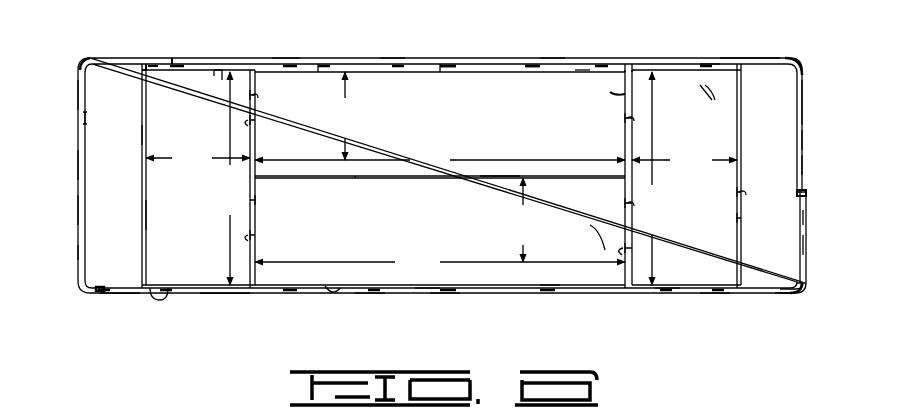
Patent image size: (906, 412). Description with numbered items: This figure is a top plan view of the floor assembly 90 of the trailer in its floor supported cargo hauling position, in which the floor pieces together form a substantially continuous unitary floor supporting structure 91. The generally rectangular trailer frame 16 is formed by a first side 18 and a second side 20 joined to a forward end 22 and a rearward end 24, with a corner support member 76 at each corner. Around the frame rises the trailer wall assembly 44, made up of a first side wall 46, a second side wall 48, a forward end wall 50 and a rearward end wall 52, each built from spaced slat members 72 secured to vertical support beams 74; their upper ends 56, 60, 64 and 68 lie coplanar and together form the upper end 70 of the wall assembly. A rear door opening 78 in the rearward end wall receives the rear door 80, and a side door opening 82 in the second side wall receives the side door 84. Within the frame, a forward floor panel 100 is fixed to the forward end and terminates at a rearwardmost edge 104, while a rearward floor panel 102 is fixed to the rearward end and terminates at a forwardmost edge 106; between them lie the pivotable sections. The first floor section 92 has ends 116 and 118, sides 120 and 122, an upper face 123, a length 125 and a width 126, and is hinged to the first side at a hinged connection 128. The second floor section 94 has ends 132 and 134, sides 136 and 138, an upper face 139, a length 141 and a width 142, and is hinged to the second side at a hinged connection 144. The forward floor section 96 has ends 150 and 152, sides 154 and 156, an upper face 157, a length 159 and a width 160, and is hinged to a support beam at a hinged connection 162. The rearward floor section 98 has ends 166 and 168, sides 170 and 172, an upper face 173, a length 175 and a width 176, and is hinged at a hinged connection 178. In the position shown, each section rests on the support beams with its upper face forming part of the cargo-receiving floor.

The trailer frame 16 is at (742, 60).
The first side 18 is at (548, 70).
The second side 20 is at (442, 294).
The forward end 22 is at (80, 85).
The rearward end 24 is at (801, 110).
The trailer wall assembly 44 is at (76, 166).
The first side wall 46 is at (392, 60).
The second side wall 48 is at (368, 294).
The forward end wall 50 is at (78, 217).
The rearward end wall 52 is at (803, 140).
The upper end 56 is at (452, 70).
The upper end 60 is at (716, 294).
The upper end 64 is at (80, 204).
The upper end 68 is at (801, 90).
The upper end 70 is at (225, 296).
The slat members 72 is at (78, 253).
The vertical support beams 74 is at (86, 118).
The corner support member 76 is at (82, 60).
The rear door opening 78 is at (797, 196).
The rear door 80 is at (805, 242).
The side door opening 82 is at (101, 287).
The side door 84 is at (120, 295).
The floor assembly 90 is at (600, 232).
The floor supporting structure 91 is at (712, 100).
The first floor section 92 is at (428, 116).
The second floor section 94 is at (448, 226).
The forward floor section 96 is at (192, 191).
The rearward floor section 98 is at (698, 126).
The forward floor panel 100 is at (120, 166).
The rearward floor panel 102 is at (776, 136).
The rearwardmost edge 104 is at (147, 216).
The forwardmost edge 106 is at (738, 218).
The end 116 is at (250, 122).
The end 118 is at (627, 119).
The side 120 is at (532, 72).
The side 122 is at (503, 180).
The upper face 123 is at (320, 82).
The length 125 is at (440, 160).
The width 126 is at (348, 116).
The hinged connection 128 is at (446, 72).
The end 132 is at (252, 236).
The end 134 is at (627, 201).
The side 136 is at (330, 288).
The side 138 is at (362, 180).
The upper face 139 is at (550, 272).
The length 141 is at (440, 262).
The width 142 is at (526, 220).
The hinged connection 144 is at (425, 291).
The end 150 is at (160, 292).
The end 152 is at (153, 68).
The side 154 is at (143, 136).
The side 156 is at (252, 96).
The upper face 157 is at (216, 78).
The length 159 is at (233, 178).
The width 160 is at (198, 158).
The hinged connection 162 is at (256, 201).
The end 166 is at (668, 292).
The end 168 is at (633, 68).
The side 170 is at (739, 193).
The side 172 is at (634, 252).
The upper face 173 is at (716, 80).
The length 175 is at (655, 178).
The width 176 is at (684, 160).
The hinged connection 178 is at (620, 94).